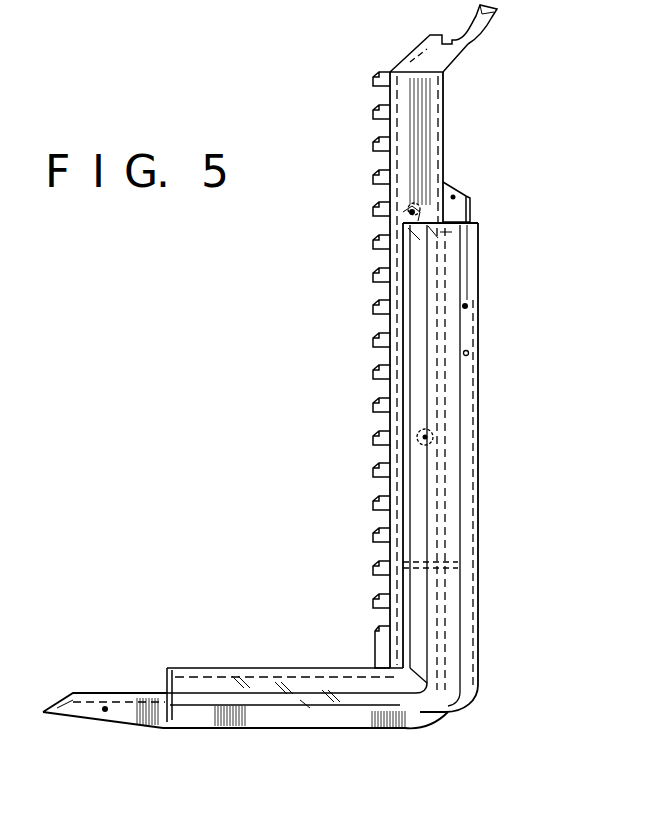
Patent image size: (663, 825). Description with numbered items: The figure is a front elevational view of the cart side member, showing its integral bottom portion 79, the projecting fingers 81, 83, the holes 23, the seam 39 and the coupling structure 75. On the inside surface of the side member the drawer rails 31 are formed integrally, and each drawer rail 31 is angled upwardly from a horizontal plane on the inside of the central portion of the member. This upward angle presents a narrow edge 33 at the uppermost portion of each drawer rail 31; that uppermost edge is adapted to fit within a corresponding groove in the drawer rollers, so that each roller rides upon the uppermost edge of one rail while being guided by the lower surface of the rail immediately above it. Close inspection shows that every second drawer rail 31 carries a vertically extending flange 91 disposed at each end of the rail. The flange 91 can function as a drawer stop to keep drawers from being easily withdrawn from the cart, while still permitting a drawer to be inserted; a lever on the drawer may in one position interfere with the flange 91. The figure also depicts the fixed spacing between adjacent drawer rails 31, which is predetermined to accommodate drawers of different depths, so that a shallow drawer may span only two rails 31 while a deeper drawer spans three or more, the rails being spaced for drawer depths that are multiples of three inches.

The holes 23 is at (470, 352).
The drawer rail 31 is at (376, 132).
The narrow edge 33 is at (379, 298).
The seam 39 is at (478, 223).
The coupling structure 75 is at (466, 186).
The integral bottom portion 79 is at (293, 736).
The projecting finger 81 is at (118, 724).
The projecting finger 83 is at (100, 692).
The vertically extending flange 91 is at (379, 576).